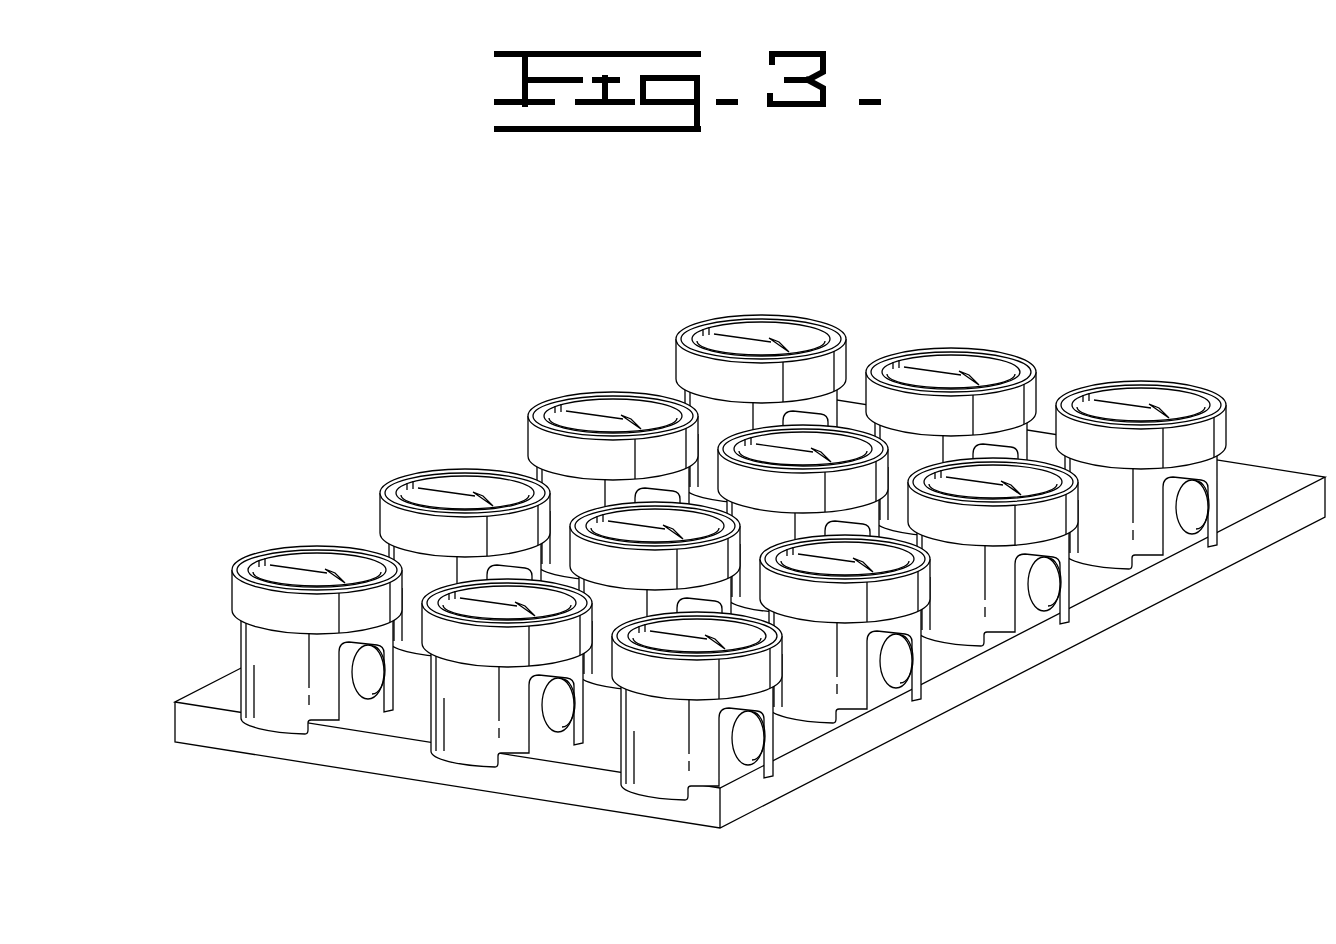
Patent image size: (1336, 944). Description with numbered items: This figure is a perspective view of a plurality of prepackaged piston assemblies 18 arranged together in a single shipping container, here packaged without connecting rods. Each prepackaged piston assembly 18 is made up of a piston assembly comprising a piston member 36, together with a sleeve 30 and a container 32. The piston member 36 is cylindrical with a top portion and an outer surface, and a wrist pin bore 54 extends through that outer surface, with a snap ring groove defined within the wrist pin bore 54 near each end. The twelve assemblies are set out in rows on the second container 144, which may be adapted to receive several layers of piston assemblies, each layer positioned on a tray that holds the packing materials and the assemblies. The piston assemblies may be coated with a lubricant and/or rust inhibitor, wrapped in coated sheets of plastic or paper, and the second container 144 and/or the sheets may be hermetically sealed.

The prepackaged piston assembly 18 is at (729, 489).
The sleeve 30 is at (735, 394).
The container 32 is at (1262, 484).
The piston member 36 is at (705, 424).
The wrist pin bore 54 is at (746, 745).
The second container 144 is at (828, 748).